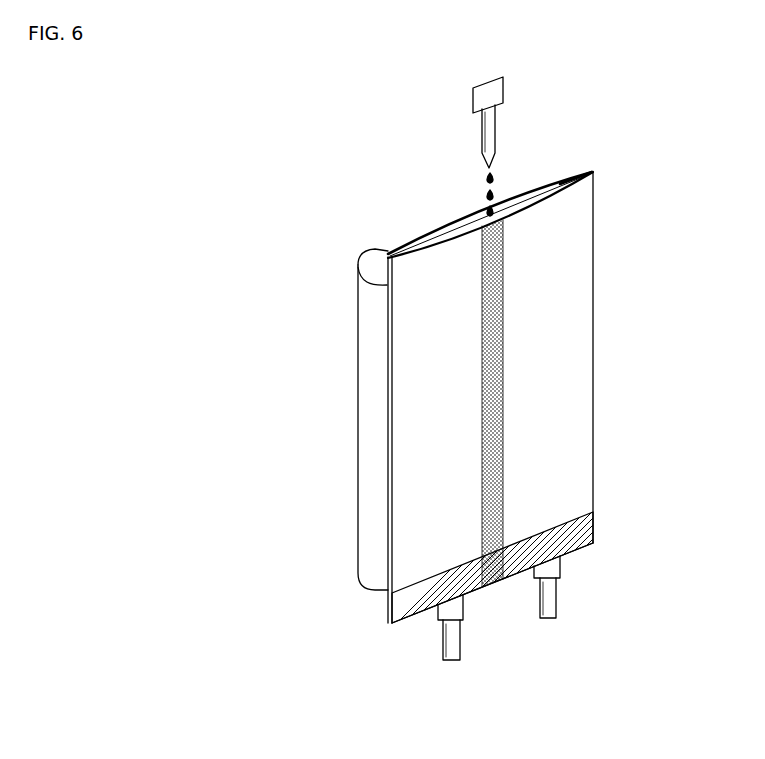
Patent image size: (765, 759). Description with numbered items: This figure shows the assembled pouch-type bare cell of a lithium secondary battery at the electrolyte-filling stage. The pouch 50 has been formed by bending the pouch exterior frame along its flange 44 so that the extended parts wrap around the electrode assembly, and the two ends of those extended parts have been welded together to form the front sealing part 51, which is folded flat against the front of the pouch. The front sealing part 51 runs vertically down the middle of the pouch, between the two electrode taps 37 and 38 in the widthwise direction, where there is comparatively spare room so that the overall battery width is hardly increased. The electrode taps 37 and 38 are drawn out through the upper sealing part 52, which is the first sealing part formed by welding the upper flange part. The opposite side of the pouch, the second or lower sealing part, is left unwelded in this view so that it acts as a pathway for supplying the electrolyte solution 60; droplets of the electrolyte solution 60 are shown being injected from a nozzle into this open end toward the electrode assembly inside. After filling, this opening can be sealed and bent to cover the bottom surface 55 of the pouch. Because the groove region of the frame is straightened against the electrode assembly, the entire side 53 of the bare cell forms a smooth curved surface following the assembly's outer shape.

The pouch 50 is at (350, 246).
The bottom surface 55 is at (390, 248).
The flange 44 is at (567, 176).
The side of the pouch-type bare cell 53 is at (370, 383).
The front sealing part 51 is at (497, 302).
The upper sealing part 52 is at (592, 526).
The electrode tap 38 is at (452, 652).
The electrode tap 37 is at (550, 610).
The electrolyte solution 60 is at (493, 178).